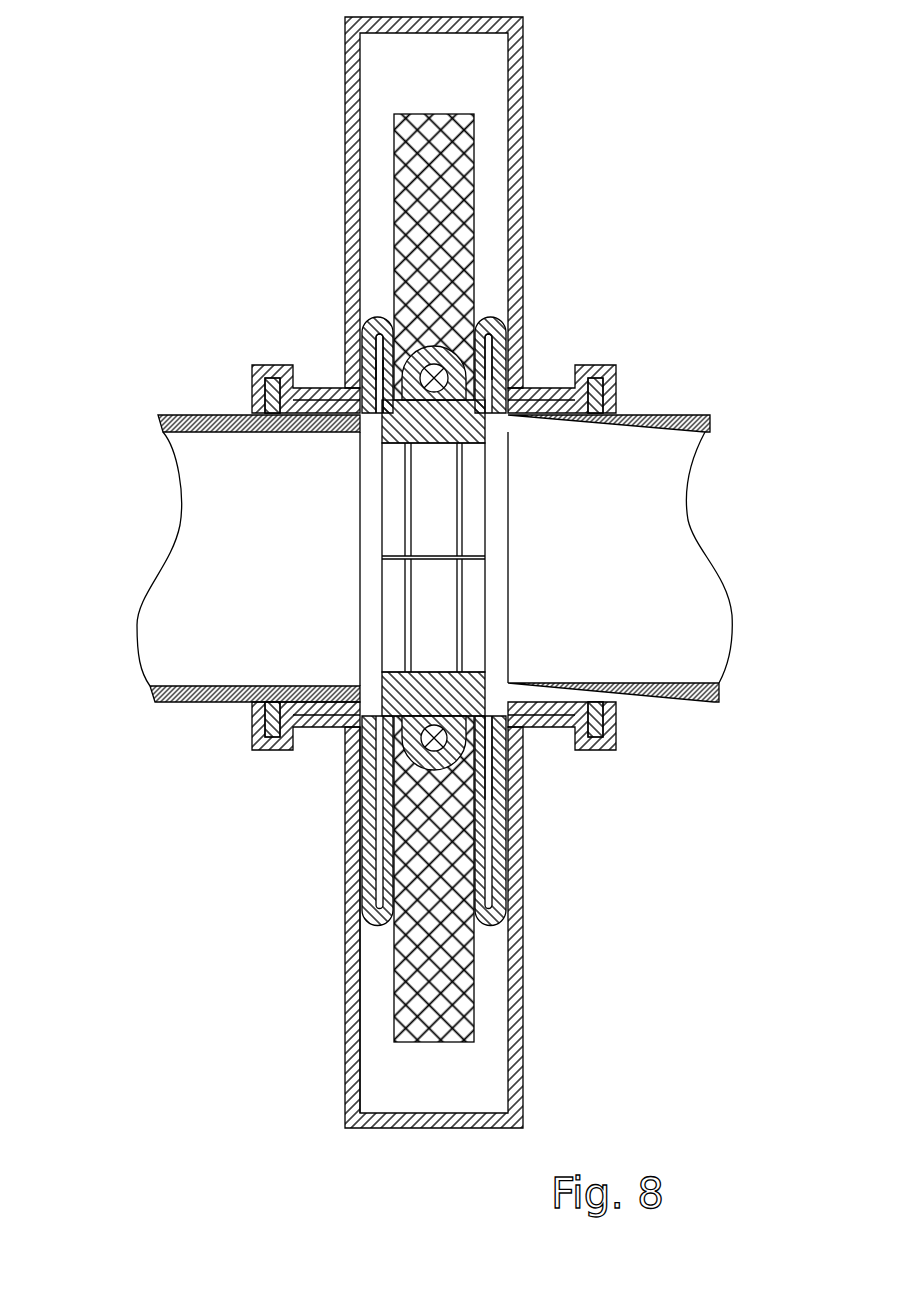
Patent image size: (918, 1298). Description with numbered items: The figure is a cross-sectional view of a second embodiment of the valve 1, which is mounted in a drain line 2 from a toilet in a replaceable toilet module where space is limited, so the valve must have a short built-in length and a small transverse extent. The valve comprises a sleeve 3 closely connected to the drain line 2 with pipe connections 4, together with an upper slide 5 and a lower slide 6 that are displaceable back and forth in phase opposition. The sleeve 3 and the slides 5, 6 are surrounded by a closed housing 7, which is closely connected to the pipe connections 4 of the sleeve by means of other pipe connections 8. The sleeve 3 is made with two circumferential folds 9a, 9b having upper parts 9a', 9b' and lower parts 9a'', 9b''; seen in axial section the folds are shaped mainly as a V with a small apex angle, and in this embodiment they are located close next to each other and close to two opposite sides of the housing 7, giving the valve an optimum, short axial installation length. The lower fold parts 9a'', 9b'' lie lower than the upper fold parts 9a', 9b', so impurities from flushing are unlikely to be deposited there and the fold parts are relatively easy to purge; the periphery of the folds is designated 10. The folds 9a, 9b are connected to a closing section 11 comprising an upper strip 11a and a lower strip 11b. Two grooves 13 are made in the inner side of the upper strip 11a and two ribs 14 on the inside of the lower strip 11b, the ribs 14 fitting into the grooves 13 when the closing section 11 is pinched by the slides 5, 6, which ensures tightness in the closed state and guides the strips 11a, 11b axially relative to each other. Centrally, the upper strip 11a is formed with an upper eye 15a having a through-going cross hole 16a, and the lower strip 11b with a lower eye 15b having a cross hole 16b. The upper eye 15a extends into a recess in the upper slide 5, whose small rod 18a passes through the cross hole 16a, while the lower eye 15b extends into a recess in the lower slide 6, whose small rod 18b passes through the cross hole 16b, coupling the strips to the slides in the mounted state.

The valve 1 is at (123, 60).
The drain line 2 is at (160, 413).
The sleeve 3 is at (355, 825).
The pipe connections 4 is at (563, 412).
The upper slide 5 is at (433, 130).
The lower slide 6 is at (413, 1020).
The housing 7 is at (350, 1030).
The other pipe connections 8 is at (320, 388).
The circumferential fold 9a is at (335, 319).
The upper fold part 9a' is at (320, 338).
The lower fold part 9a'' is at (329, 820).
The circumferential fold 9b is at (542, 326).
The upper fold part 9b' is at (550, 328).
The lower fold part 9b'' is at (546, 860).
The periphery of the folds 10 is at (446, 366).
The closing section 11 is at (383, 490).
The upper strip 11a is at (383, 548).
The lower strip 11b is at (383, 598).
The grooves 13 is at (463, 520).
The ribs 14 is at (463, 585).
The upper eye 15a is at (376, 345).
The lower eye 15b is at (470, 752).
The cross hole 16a is at (452, 362).
The cross hole 16b is at (486, 770).
The small rod 18a is at (450, 395).
The small rod 18b is at (400, 738).